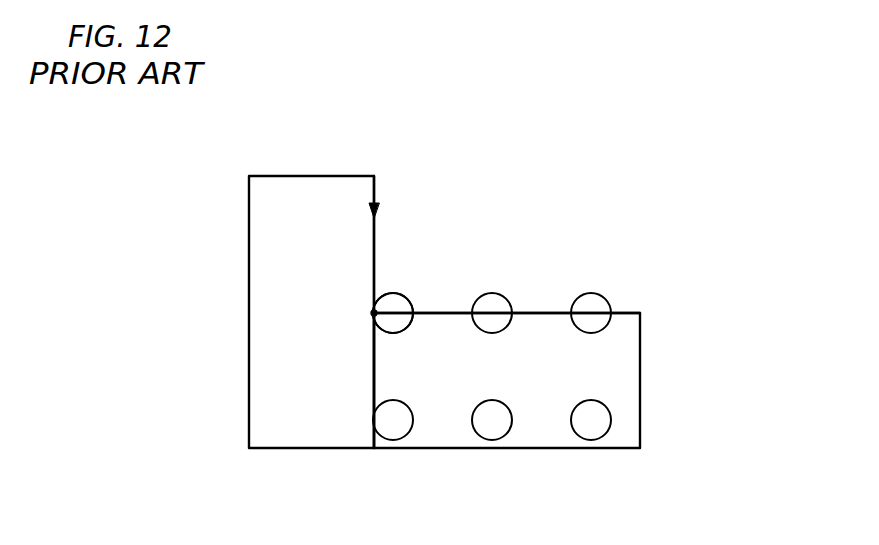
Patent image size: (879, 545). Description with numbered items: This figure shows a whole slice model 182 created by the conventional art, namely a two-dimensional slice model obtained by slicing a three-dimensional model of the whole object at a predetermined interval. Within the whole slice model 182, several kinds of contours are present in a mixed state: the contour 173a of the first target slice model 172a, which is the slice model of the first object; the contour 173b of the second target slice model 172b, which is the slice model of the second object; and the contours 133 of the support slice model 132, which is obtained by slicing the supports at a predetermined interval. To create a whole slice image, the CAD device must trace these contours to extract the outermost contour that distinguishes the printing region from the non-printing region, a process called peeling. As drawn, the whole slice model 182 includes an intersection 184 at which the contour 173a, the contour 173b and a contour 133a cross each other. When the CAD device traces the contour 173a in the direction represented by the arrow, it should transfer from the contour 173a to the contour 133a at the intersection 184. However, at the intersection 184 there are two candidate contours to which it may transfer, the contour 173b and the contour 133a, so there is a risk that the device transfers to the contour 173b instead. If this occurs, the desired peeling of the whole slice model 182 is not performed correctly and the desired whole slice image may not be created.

The first target slice model 172a is at (218, 262).
The second target slice model 172b is at (668, 380).
The contour of the first target slice model 173a is at (312, 176).
The contour of the second target slice model 173b is at (628, 312).
The whole slice model 182 is at (621, 182).
The intersection 184 is at (374, 313).
The contours of the support slice model 133 is at (580, 293).
The contour of the support slice model 133a is at (392, 288).
The support slice model 132 is at (578, 340).